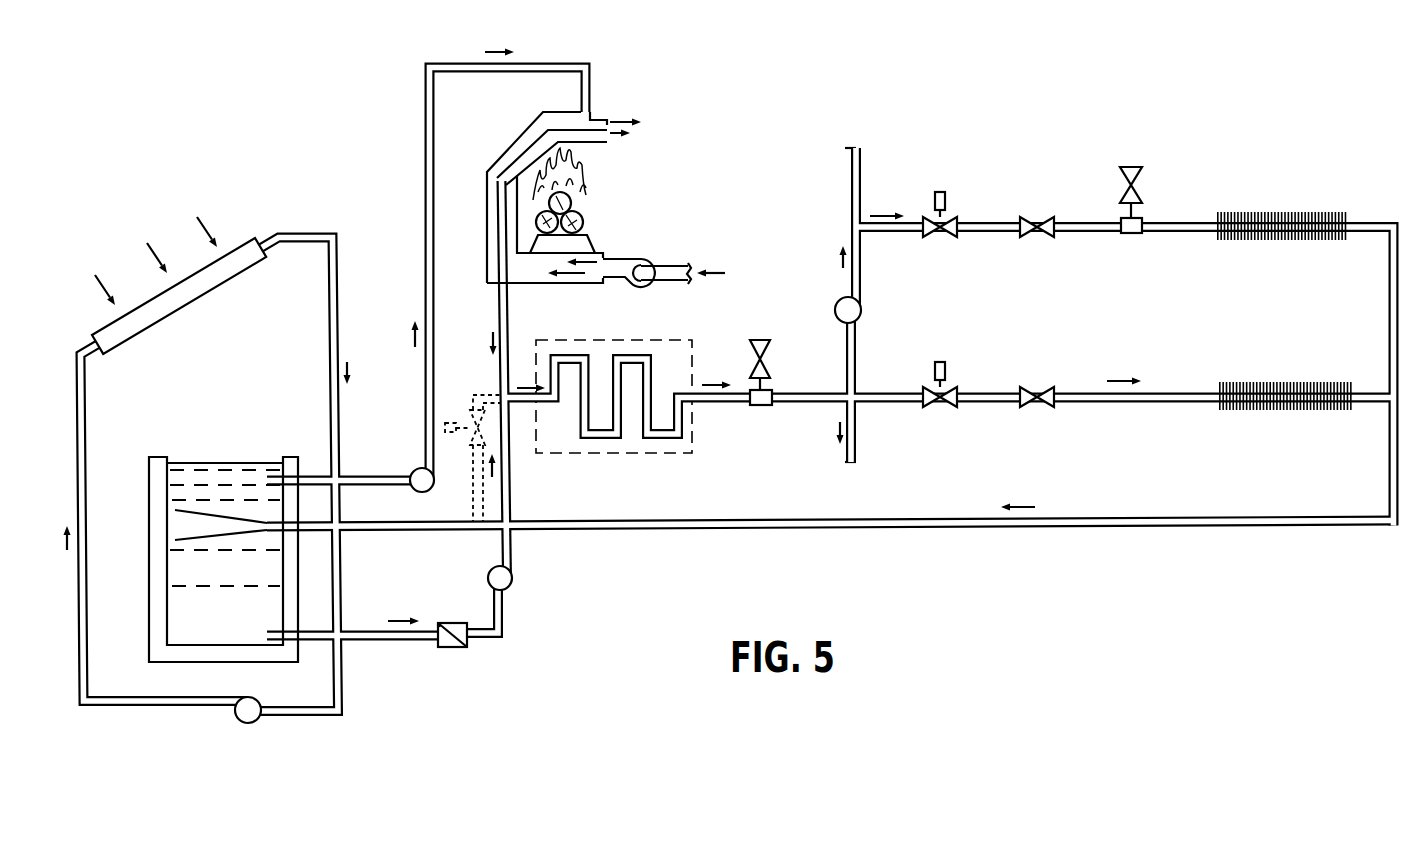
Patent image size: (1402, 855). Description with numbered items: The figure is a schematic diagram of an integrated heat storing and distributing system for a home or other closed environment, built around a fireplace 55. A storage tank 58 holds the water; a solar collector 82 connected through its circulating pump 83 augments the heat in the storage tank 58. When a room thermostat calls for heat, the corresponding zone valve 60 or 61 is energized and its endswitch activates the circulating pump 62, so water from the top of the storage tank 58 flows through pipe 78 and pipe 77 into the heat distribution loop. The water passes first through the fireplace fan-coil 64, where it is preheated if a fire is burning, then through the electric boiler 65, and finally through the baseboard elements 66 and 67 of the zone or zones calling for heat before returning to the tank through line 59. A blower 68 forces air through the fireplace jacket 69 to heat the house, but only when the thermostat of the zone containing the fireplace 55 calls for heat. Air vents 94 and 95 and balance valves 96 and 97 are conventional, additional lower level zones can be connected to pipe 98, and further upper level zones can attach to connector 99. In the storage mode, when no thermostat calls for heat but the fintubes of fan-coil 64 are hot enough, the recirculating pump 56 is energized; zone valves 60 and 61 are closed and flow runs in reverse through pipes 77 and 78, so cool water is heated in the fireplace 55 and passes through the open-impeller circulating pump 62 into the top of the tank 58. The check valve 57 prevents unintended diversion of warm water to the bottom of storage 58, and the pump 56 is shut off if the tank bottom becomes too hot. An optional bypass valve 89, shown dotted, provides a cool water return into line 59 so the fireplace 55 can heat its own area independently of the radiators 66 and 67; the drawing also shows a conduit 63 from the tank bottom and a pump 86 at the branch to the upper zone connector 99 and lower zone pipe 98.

The fireplace 55 is at (620, 193).
The recirculating pump 56 is at (512, 579).
The check valve 57 is at (455, 650).
The storage tank 58 is at (226, 449).
The line 59 is at (322, 533).
The zone valve 60 is at (941, 185).
The zone valve 61 is at (934, 355).
The circulating pump 62 is at (412, 468).
The conduit 63 is at (317, 631).
The fireplace fan-coil 64 is at (546, 133).
The electric boiler 65 is at (617, 453).
The baseboard element 66 is at (1245, 212).
The baseboard element 67 is at (1254, 368).
The blower 68 is at (648, 288).
The fireplace jacket 69 is at (493, 170).
The pipe 77 is at (424, 106).
The pipe 78 is at (310, 476).
The solar collector 82 is at (233, 287).
The circulating pump 83 is at (252, 724).
The pump 86 is at (836, 304).
The bypass valve 89 is at (453, 406).
The air vent 94 is at (773, 363).
The air vent 95 is at (1126, 166).
The balance valve 96 is at (1044, 209).
The balance valve 97 is at (1047, 377).
The pipe 98 is at (858, 441).
The connector 99 is at (852, 178).